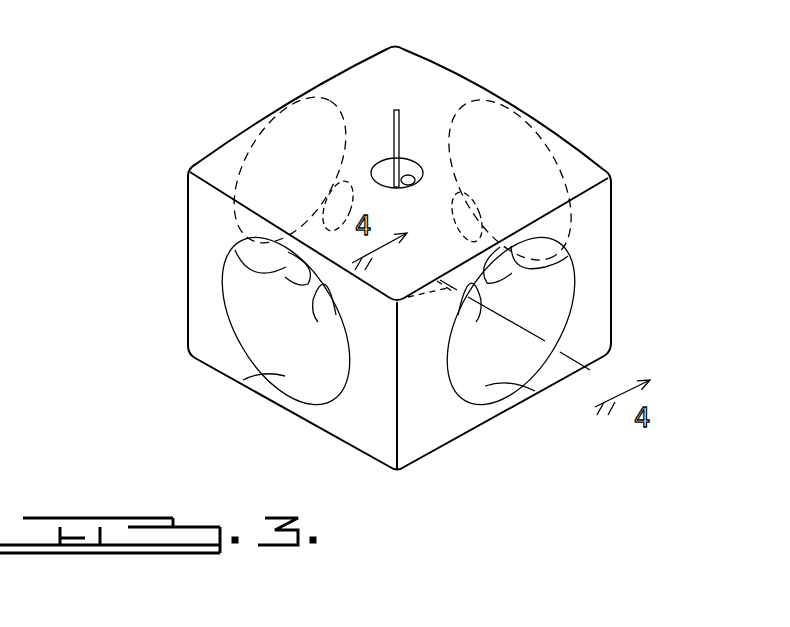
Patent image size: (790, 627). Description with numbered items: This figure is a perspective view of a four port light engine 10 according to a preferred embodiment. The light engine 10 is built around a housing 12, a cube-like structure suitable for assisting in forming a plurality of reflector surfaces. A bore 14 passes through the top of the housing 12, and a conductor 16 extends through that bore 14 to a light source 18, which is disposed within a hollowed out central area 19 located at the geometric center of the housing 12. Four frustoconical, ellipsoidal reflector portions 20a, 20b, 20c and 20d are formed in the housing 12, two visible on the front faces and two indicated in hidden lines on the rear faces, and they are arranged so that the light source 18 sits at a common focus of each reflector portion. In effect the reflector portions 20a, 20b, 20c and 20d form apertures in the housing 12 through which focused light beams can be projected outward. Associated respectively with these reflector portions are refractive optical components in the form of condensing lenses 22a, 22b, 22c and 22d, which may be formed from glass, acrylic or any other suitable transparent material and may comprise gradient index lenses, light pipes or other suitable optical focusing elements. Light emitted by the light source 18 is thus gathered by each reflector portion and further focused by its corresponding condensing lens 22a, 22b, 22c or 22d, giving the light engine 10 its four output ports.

The light engine 10 is at (152, 110).
The housing 12 is at (597, 245).
The bore 14 is at (412, 183).
The conductor 16 is at (400, 124).
The light source 18 is at (428, 308).
The hollowed out central area 19 is at (300, 278).
The reflector portion 20a is at (268, 385).
The reflector portion 20b is at (535, 392).
The reflector portion 20c is at (548, 158).
The reflector portion 20d is at (332, 112).
The condensing lens 22a is at (313, 315).
The condensing lens 22b is at (475, 310).
The condensing lens 22c is at (476, 197).
The condensing lens 22d is at (304, 200).